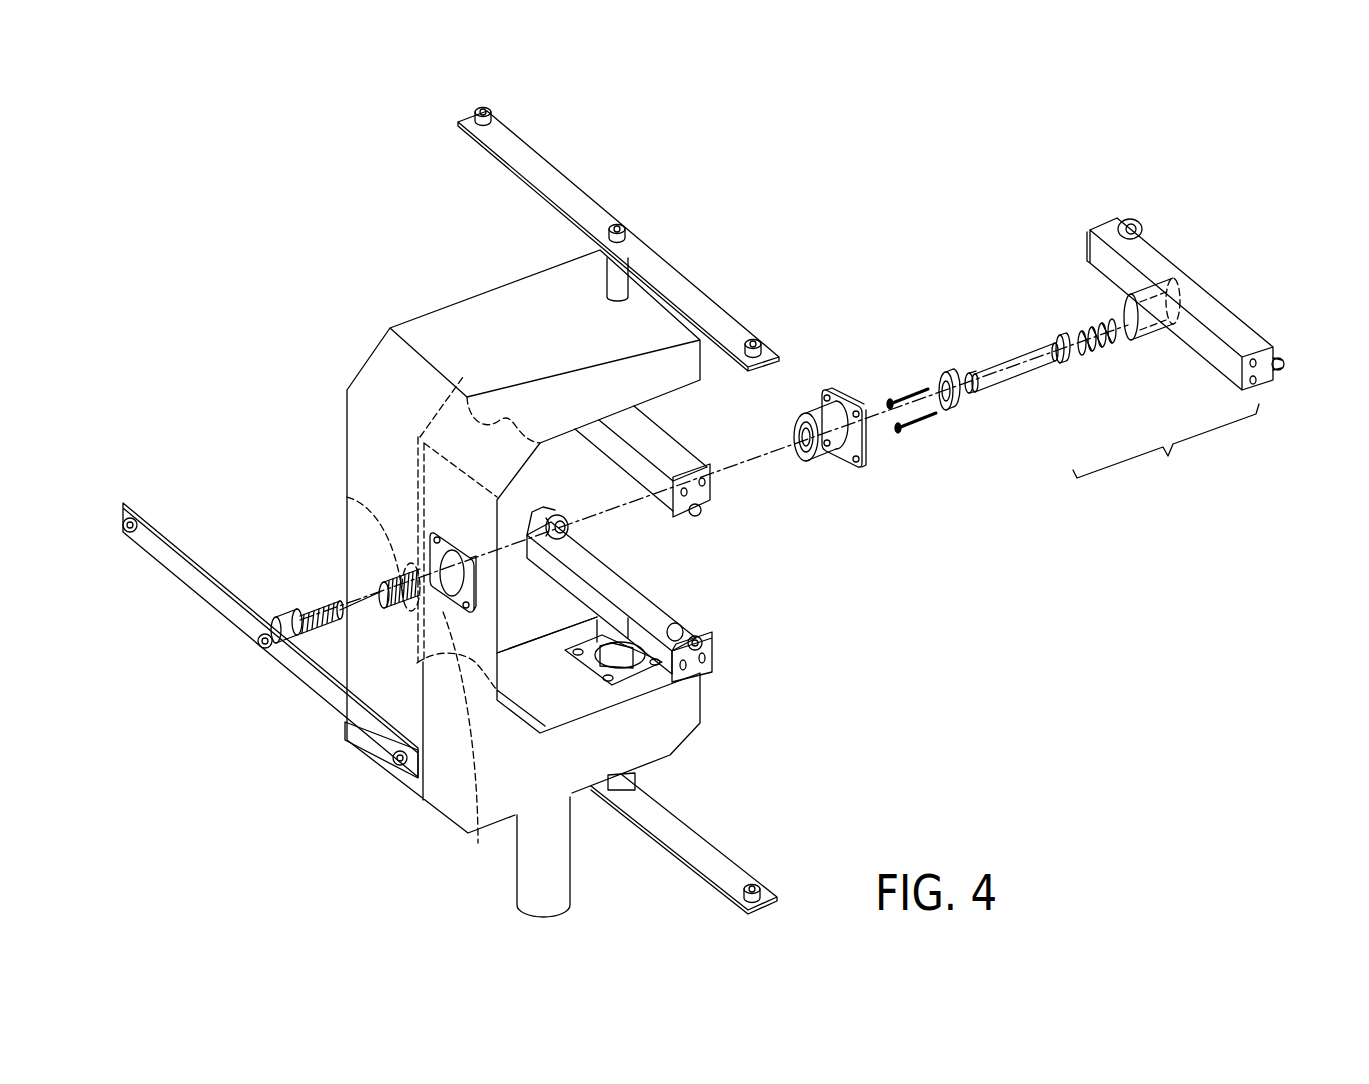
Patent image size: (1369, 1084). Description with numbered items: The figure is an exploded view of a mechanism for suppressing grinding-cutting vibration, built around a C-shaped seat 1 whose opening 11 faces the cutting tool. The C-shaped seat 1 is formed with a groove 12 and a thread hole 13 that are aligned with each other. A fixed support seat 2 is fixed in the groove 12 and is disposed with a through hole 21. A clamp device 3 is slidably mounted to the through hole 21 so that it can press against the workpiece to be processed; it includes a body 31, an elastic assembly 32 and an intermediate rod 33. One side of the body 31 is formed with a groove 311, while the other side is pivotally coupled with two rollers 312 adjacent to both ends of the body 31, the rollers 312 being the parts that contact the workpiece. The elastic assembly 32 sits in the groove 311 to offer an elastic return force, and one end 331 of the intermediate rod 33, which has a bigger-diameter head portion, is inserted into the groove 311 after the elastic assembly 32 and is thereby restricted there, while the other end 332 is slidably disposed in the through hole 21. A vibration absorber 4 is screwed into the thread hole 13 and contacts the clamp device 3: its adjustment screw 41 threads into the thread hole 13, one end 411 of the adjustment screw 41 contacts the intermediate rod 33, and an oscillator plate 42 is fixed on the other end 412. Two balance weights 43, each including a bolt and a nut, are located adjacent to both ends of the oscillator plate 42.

The C-shaped seat 1 is at (425, 330).
The opening 11 is at (712, 542).
The groove 12 is at (506, 764).
The thread hole 13 is at (347, 497).
The fixed support seat 2 is at (848, 380).
The through hole 21 is at (800, 438).
The clamp device 3 is at (779, 472).
The body 31 is at (612, 580).
The groove 311 is at (1136, 338).
The rollers 312 is at (557, 525).
The elastic assembly 32 is at (1102, 352).
The intermediate rod 33 is at (1020, 366).
The end 331 is at (1060, 335).
The other end 332 is at (977, 366).
The vibration absorber 4 is at (578, 158).
The adjustment screw 41 is at (612, 280).
The end 411 is at (327, 606).
The other end 412 is at (280, 622).
The oscillator plate 42 is at (660, 280).
The balance weights 43 is at (486, 112).